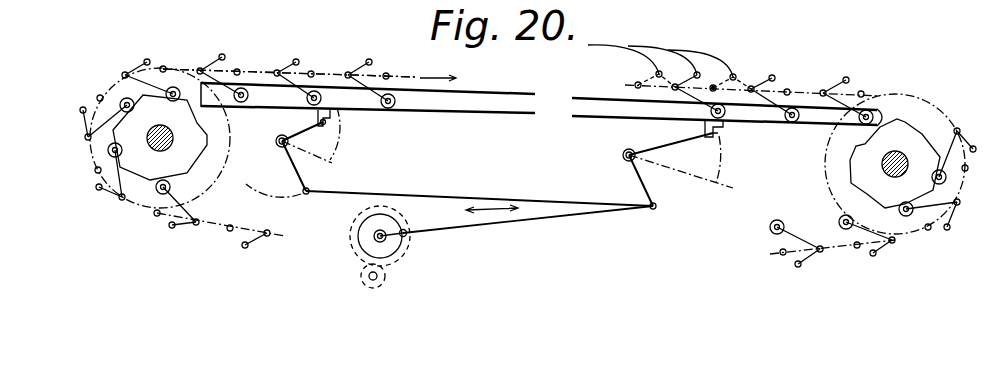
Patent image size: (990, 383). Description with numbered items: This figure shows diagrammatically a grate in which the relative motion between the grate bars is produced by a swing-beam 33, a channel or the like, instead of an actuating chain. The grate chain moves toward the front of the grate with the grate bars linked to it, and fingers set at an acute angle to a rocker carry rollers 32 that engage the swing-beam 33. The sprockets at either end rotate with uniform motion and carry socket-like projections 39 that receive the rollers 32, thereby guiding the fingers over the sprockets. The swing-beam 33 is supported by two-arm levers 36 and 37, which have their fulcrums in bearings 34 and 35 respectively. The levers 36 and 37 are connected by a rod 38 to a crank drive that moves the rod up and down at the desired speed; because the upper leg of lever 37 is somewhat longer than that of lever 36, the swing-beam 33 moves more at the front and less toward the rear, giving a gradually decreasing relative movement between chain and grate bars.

The roller 32 is at (396, 108).
The swing-beam 33 is at (541, 104).
The bearing 34 is at (280, 146).
The bearing 35 is at (624, 160).
The two-arm lever 36 is at (295, 138).
The two-arm lever 37 is at (672, 140).
The rod 38 is at (407, 192).
The socket-like projection 39 is at (183, 165).